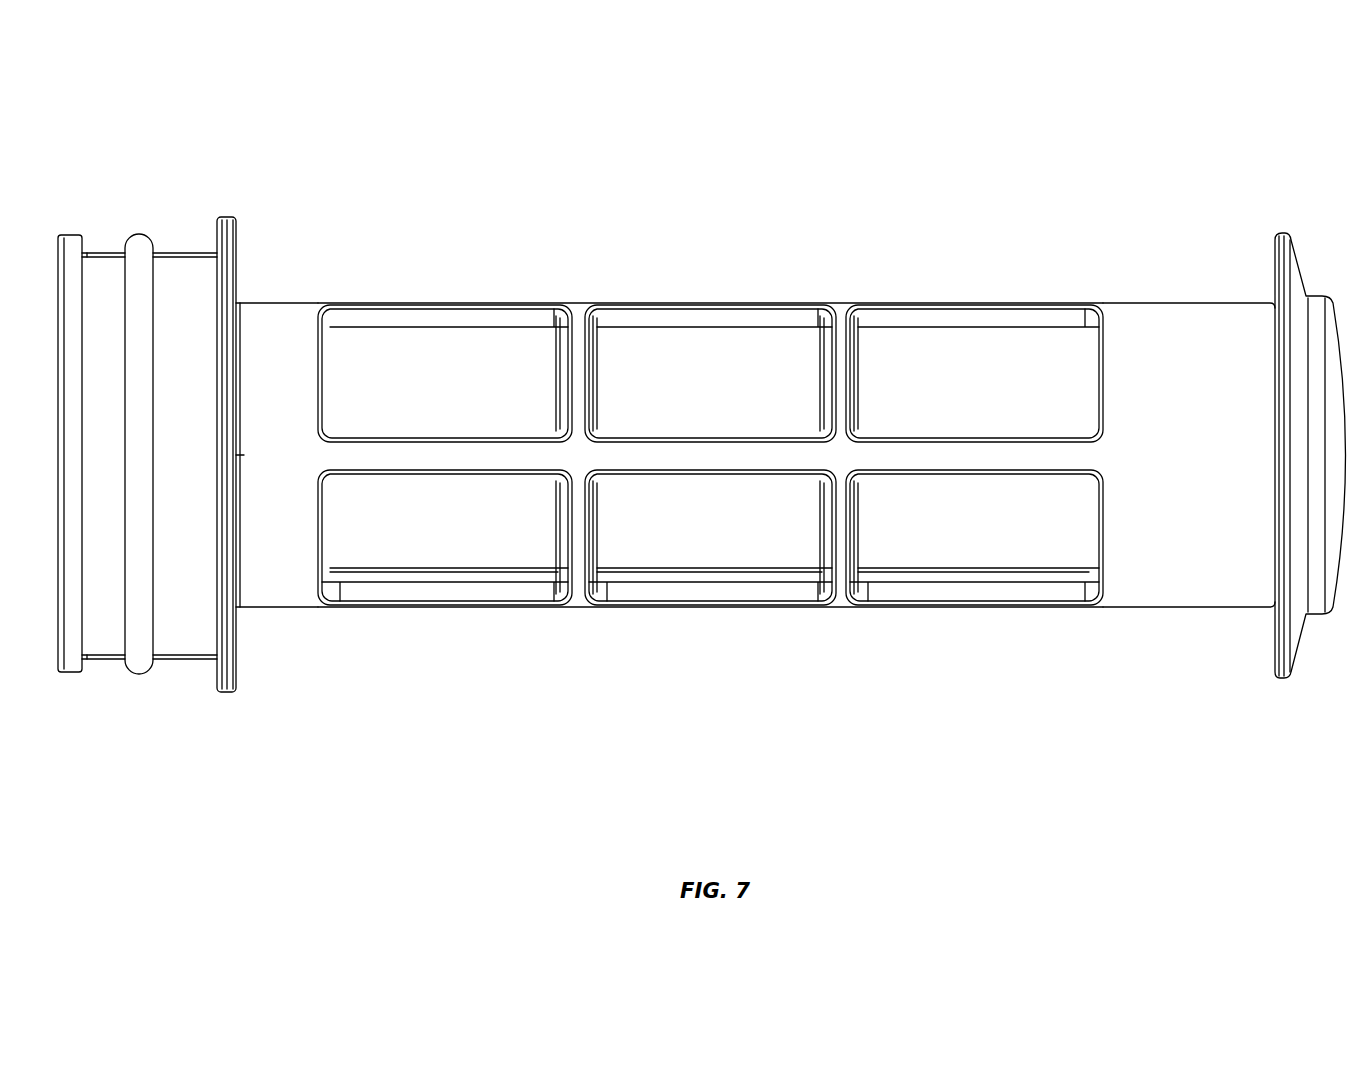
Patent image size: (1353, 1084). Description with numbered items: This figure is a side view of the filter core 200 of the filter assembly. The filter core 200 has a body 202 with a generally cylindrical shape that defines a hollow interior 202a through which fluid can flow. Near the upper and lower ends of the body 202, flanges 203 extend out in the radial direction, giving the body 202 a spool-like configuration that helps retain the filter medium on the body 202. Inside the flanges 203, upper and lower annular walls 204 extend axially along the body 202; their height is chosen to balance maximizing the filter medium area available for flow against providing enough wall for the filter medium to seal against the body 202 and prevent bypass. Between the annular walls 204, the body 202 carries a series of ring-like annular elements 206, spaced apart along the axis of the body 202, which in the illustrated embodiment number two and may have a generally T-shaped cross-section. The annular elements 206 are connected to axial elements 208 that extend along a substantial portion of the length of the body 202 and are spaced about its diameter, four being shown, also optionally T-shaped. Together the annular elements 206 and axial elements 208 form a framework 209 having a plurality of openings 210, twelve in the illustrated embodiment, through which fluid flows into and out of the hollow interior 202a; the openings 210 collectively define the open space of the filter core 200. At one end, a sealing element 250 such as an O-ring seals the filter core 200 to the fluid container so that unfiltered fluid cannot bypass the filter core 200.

The filter core 200 is at (704, 394).
The body 202 is at (973, 271).
The hollow interior 202a is at (688, 532).
The flanges 203 is at (231, 218).
The annular walls 204 is at (275, 608).
The annular elements 206 is at (846, 306).
The axial elements 208 is at (710, 307).
The framework 209 is at (591, 271).
The openings 210 is at (480, 353).
The sealing element 250 is at (145, 236).